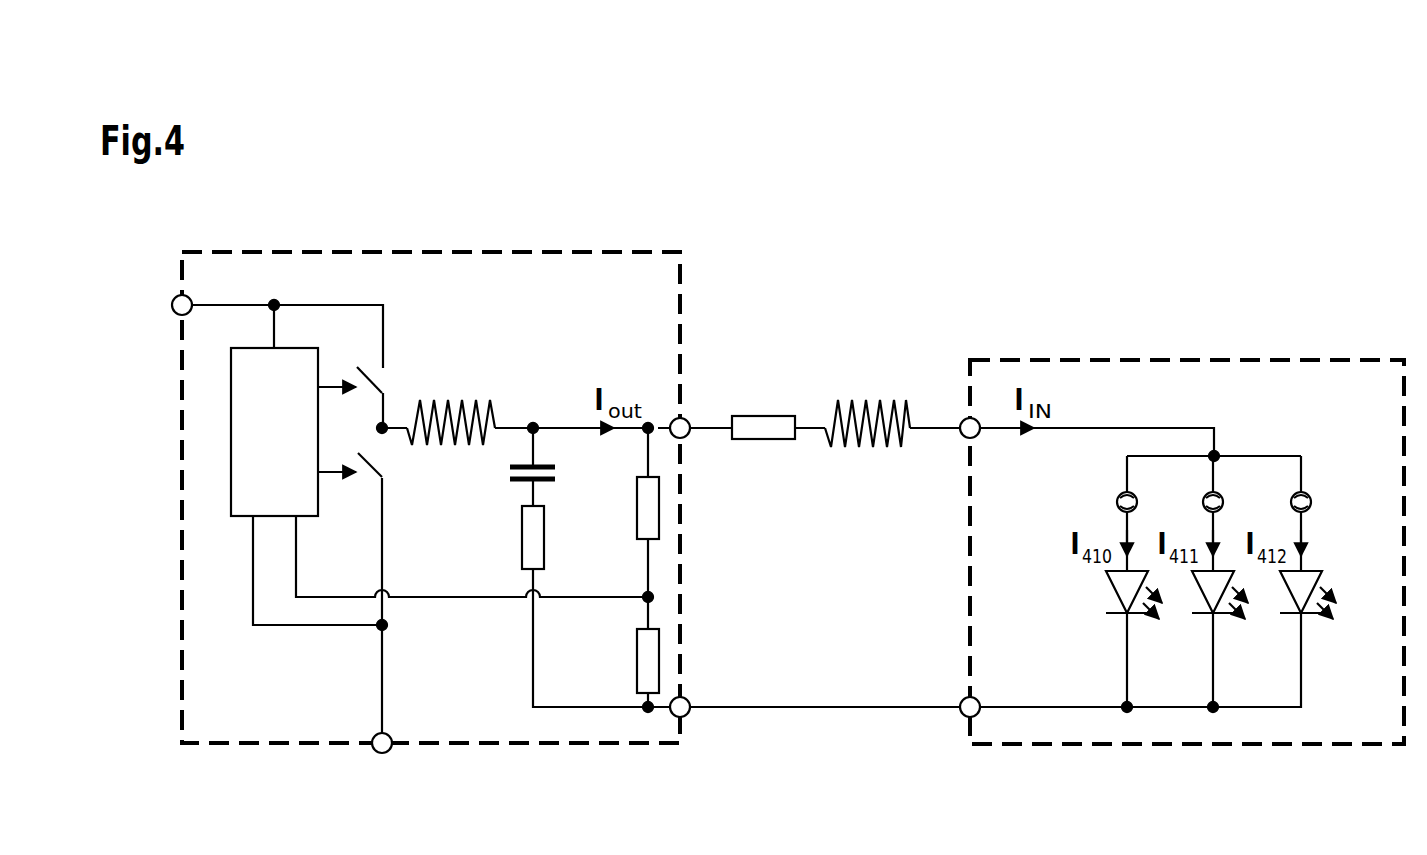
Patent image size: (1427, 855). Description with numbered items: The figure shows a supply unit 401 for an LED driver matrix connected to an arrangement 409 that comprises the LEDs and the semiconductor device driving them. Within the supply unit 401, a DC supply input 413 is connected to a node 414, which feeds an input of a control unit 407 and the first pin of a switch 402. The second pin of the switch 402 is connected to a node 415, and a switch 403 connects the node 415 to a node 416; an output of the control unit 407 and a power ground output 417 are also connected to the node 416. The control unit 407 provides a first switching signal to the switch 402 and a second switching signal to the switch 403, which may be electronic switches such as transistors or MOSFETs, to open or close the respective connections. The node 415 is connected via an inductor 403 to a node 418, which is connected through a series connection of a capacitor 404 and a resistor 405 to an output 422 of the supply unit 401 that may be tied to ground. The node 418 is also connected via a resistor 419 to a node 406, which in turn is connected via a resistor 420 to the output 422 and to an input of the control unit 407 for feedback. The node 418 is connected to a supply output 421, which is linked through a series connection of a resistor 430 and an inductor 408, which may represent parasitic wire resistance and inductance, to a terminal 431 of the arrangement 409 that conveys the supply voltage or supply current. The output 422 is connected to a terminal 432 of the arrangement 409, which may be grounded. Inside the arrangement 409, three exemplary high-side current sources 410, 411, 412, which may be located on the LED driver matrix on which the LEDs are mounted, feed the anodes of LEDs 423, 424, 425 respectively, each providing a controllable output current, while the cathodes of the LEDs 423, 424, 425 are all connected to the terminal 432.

The supply unit 401 is at (647, 251).
The switch 402 is at (390, 383).
The switch 403 is at (455, 398).
The capacitor 404 is at (511, 481).
The resistor 405 is at (506, 537).
The node 406 is at (627, 582).
The control unit 407 is at (293, 432).
The inductor 408 is at (867, 444).
The arrangement 409 is at (1172, 358).
The current source 410 is at (1105, 501).
The current source 411 is at (1191, 501).
The current source 412 is at (1278, 501).
The DC supply input 413 is at (160, 319).
The node 414 is at (282, 290).
The node 415 is at (361, 428).
The node 416 is at (405, 633).
The power ground output 417 is at (380, 764).
The node 418 is at (535, 411).
The resistor 419 is at (625, 508).
The resistor 420 is at (625, 661).
The supply output 421 is at (697, 411).
The output 422 is at (697, 691).
The LED 423 is at (1120, 613).
The LED 424 is at (1207, 613).
The LED 425 is at (1295, 613).
The resistor 430 is at (763, 447).
The terminal 431 is at (951, 411).
The terminal 432 is at (951, 692).